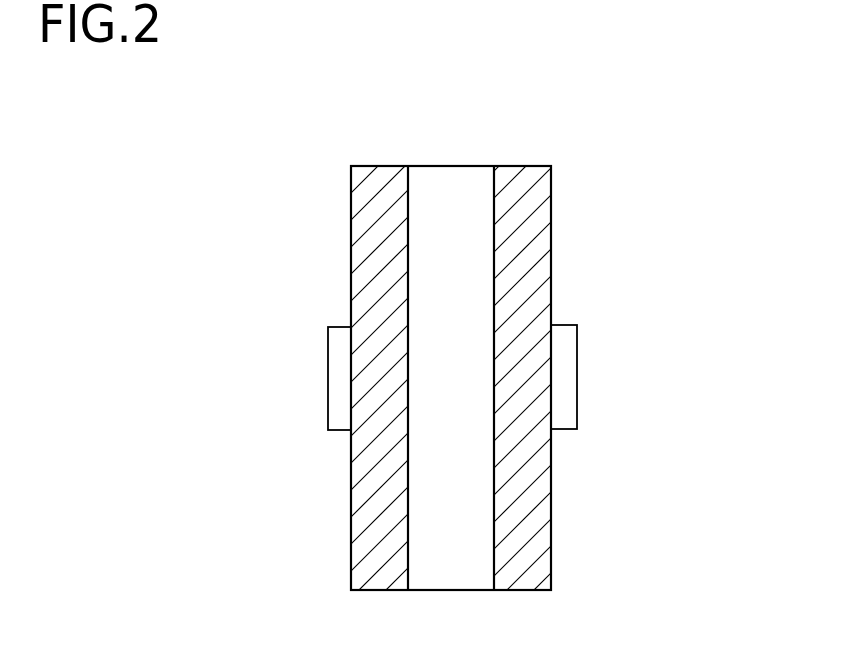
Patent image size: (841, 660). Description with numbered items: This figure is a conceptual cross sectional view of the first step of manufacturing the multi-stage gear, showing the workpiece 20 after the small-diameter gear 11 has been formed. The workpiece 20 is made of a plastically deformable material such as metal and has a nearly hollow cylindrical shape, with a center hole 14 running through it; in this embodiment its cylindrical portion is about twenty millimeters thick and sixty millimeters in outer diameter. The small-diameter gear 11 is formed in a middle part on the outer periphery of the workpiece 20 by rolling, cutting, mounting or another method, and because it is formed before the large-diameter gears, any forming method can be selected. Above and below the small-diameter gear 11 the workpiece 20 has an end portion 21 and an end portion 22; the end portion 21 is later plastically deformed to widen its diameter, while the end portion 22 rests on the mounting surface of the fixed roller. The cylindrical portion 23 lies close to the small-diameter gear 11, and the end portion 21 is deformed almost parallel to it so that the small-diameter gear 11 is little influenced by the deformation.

The workpiece 20 is at (420, 330).
The end portion 21 is at (368, 166).
The end portion 22 is at (370, 590).
The cylindrical portion 23 is at (543, 268).
The center hole 14 is at (470, 187).
The small-diameter gear 11 is at (340, 368).